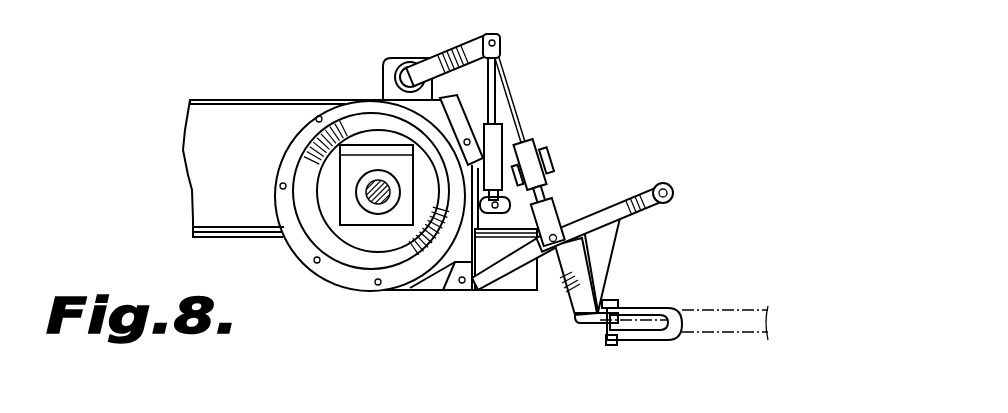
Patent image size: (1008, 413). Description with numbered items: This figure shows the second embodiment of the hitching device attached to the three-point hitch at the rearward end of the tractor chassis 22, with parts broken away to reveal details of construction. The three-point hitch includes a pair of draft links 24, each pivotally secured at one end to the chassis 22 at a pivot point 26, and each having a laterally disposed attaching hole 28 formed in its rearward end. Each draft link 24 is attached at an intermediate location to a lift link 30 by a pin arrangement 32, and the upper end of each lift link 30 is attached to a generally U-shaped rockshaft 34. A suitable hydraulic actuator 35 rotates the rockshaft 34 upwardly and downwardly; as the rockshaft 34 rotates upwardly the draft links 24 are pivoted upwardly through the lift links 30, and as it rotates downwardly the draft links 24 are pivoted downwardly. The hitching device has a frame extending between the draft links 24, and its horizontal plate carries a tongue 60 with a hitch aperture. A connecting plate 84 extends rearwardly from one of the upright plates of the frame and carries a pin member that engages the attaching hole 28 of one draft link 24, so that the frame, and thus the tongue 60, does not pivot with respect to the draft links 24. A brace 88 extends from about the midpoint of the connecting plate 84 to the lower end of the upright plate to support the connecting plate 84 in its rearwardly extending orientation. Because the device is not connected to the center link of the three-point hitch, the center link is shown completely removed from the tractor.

The chassis 22 is at (260, 104).
The draft link 24 is at (500, 290).
The pivot point 26 is at (453, 292).
The attaching hole 28 is at (663, 183).
The lift link 30 is at (502, 82).
The pin arrangement 32 is at (554, 283).
The rockshaft 34 is at (440, 61).
The hydraulic actuator 35 is at (513, 105).
The tongue 60 is at (628, 312).
The connecting plate 84 is at (618, 206).
The brace 88 is at (612, 250).